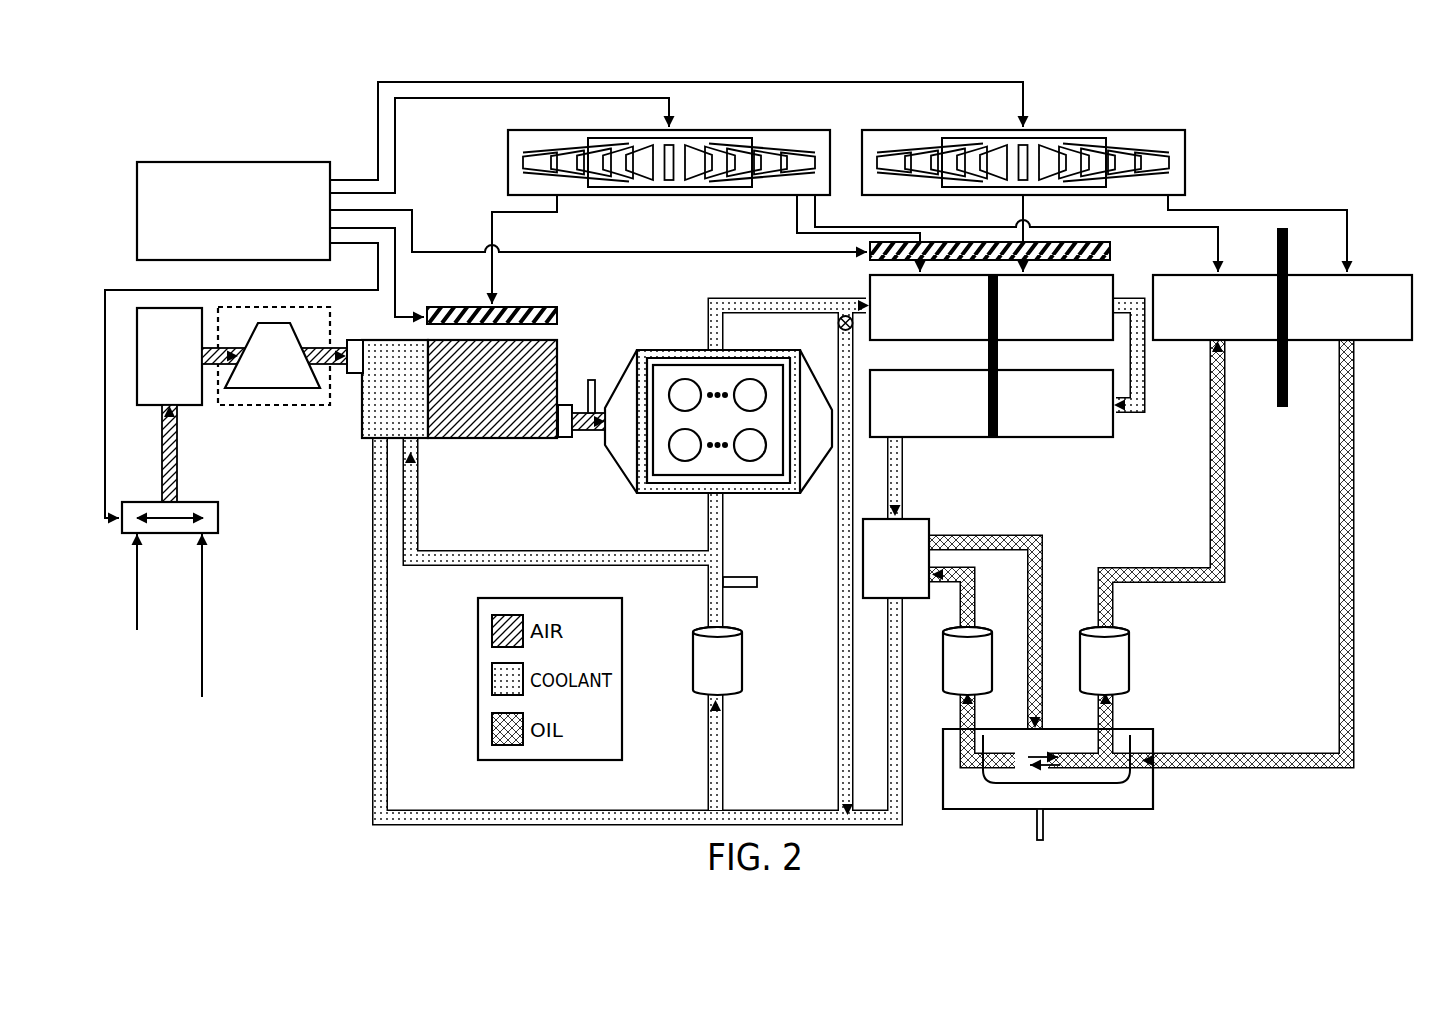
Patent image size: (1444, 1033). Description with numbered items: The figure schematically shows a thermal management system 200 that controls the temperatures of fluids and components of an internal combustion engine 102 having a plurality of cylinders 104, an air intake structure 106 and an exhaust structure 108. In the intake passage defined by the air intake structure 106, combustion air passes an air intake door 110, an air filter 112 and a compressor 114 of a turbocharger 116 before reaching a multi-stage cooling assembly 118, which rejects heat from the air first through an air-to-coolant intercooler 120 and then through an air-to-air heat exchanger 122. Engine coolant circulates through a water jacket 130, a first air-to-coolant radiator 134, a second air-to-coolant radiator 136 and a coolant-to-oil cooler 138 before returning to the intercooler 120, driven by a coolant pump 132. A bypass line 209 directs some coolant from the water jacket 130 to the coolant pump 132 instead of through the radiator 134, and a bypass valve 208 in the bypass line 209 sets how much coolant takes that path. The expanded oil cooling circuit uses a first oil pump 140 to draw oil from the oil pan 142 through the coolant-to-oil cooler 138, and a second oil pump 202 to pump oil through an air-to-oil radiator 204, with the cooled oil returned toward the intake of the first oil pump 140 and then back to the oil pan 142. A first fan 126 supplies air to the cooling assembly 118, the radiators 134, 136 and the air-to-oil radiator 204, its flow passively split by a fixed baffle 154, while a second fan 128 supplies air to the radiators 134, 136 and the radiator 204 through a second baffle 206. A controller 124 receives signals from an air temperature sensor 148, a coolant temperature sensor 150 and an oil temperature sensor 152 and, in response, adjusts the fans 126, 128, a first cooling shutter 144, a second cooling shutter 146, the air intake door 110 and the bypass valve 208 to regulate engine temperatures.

The thermal management system 200 is at (1310, 116).
The internal combustion engine 102 is at (759, 547).
The cylinders 104 is at (687, 441).
The air intake structure 106 is at (227, 529).
The exhaust structure 108 is at (823, 490).
The air intake door 110 is at (207, 501).
The air filter 112 is at (169, 356).
The compressor 114 is at (272, 355).
The turbocharger 116 is at (275, 368).
The multi-stage cooling assembly 118 is at (459, 414).
The air-to-coolant intercooler 120 is at (395, 389).
The air-to-air heat exchanger 122 is at (492, 389).
The controller 124 is at (726, 300).
The first fan 126 is at (763, 130).
The second fan 128 is at (1133, 130).
The water jacket 130 is at (752, 494).
The coolant pump 132 is at (717, 661).
The first air-to-coolant radiator 134 is at (991, 307).
The second air-to-coolant radiator 136 is at (991, 403).
The coolant-to-oil cooler 138 is at (896, 558).
The first oil pump 140 is at (967, 661).
The oil pan 142 is at (1048, 769).
The first cooling shutter 144 is at (547, 309).
The second cooling shutter 146 is at (1118, 254).
The air temperature sensor 148 is at (589, 379).
The coolant temperature sensor 150 is at (758, 582).
The oil temperature sensor 152 is at (1040, 843).
The fixed baffle 154 is at (999, 348).
The second oil pump 202 is at (1104, 661).
The air-to-oil radiator 204 is at (1282, 307).
The second baffle 206 is at (1289, 237).
The bypass valve 208 is at (837, 324).
The bypass line 209 is at (838, 650).